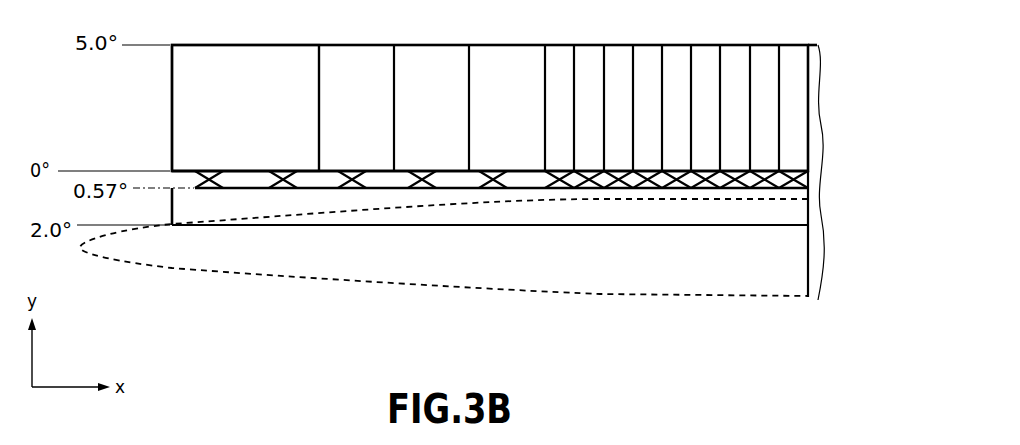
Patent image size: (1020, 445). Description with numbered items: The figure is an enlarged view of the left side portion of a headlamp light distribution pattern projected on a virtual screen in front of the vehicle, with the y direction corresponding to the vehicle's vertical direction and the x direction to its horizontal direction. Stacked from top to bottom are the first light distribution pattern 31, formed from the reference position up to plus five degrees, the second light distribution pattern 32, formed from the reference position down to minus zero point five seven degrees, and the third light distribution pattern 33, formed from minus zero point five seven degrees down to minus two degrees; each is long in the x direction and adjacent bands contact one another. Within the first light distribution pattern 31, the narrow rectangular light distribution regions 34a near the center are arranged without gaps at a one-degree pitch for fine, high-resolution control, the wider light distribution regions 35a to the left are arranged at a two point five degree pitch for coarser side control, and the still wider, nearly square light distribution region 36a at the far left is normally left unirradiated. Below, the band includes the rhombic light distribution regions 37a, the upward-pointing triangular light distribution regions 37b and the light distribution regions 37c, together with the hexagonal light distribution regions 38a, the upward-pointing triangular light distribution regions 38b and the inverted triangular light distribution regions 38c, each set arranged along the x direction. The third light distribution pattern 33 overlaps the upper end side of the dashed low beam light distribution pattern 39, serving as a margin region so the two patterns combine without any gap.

The first light distribution pattern 31 is at (822, 88).
The second light distribution pattern 32 is at (820, 180).
The third light distribution pattern 33 is at (820, 209).
The light distribution region 34a is at (561, 60).
The light distribution region 35a is at (356, 60).
The light distribution region 36a is at (229, 60).
The light distribution region 37a is at (627, 183).
The light distribution region 37b is at (648, 187).
The light distribution region 37c is at (652, 168).
The light distribution region 38a is at (236, 182).
The light distribution region 38b is at (278, 178).
The light distribution region 38c is at (283, 170).
The low beam light distribution pattern 39 is at (174, 268).